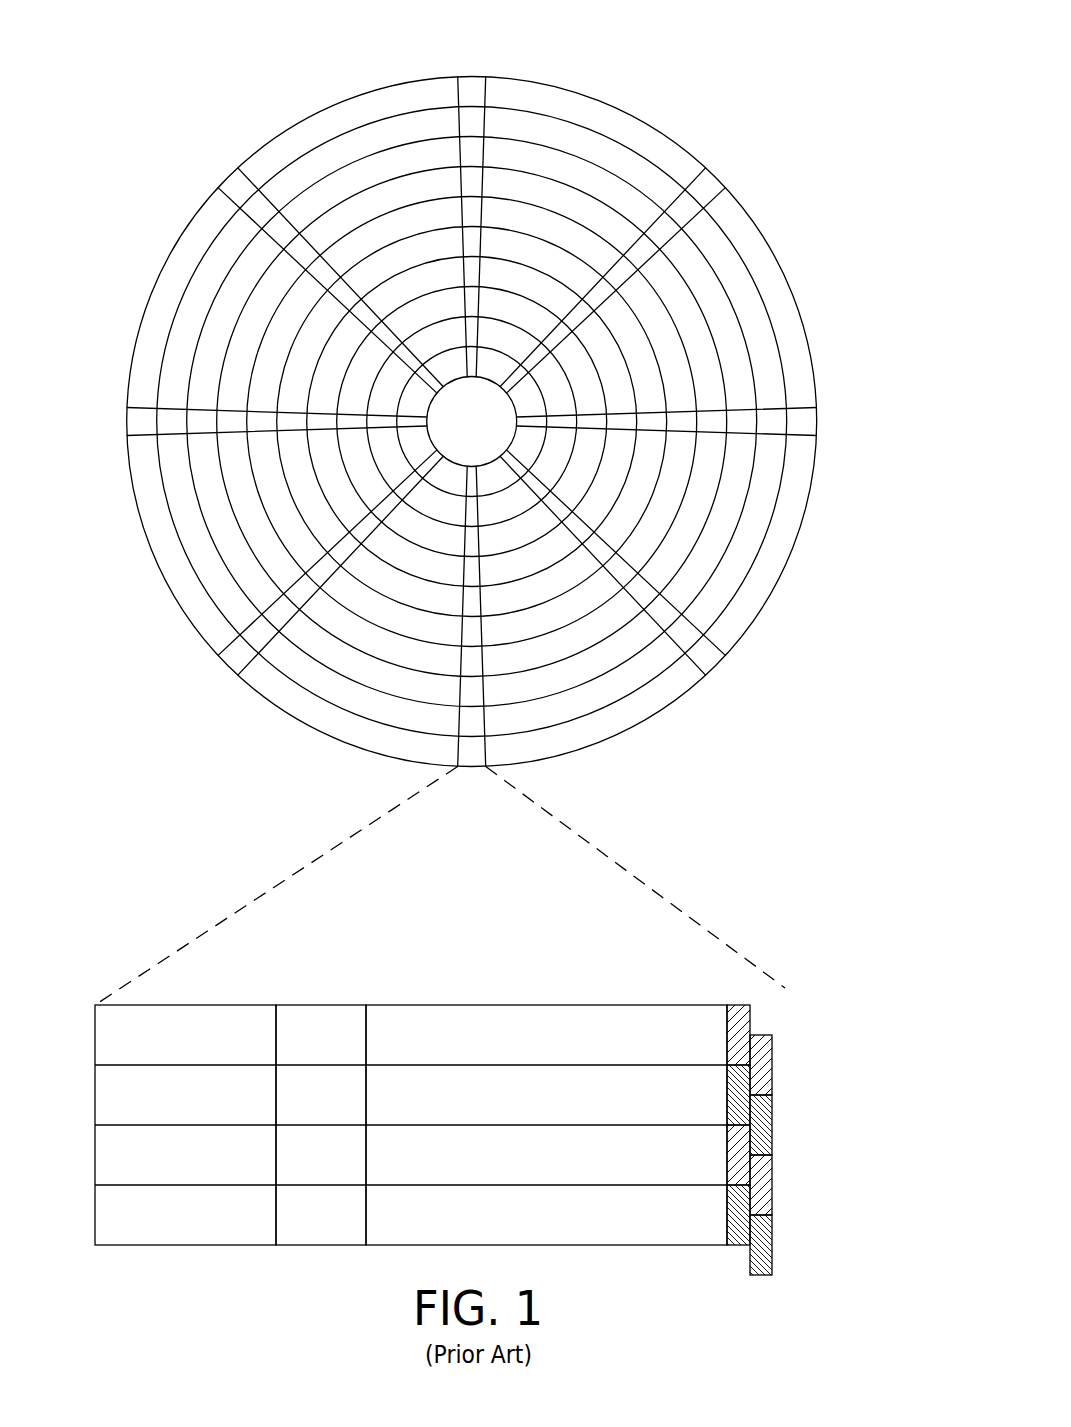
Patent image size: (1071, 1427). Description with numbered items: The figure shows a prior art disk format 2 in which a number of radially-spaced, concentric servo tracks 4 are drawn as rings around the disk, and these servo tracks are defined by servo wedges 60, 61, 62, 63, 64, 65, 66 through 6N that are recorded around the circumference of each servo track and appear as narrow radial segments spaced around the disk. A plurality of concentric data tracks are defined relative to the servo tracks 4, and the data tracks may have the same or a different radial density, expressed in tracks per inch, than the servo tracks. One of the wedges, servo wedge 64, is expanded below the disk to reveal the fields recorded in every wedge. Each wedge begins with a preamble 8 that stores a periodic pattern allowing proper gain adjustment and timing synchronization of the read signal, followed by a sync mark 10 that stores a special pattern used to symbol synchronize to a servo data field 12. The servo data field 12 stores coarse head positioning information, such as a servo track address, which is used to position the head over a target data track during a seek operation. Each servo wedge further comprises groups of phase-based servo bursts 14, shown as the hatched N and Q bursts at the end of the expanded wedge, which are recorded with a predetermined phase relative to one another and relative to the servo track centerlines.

The disk format 2 is at (213, 78).
The servo tracks 4 is at (588, 146).
The servo wedge 60 is at (472, 88).
The servo wedge 61 is at (707, 187).
The servo wedge 62 is at (806, 426).
The servo wedge 63 is at (712, 664).
The servo wedge 64 is at (318, 846).
The servo wedge 65 is at (230, 664).
The servo wedge 66 is at (134, 418).
The servo wedge 6N is at (236, 182).
The preamble 8 is at (194, 1005).
The sync mark 10 is at (324, 1005).
The servo data field 12 is at (533, 1005).
The servo bursts 14 is at (766, 1003).